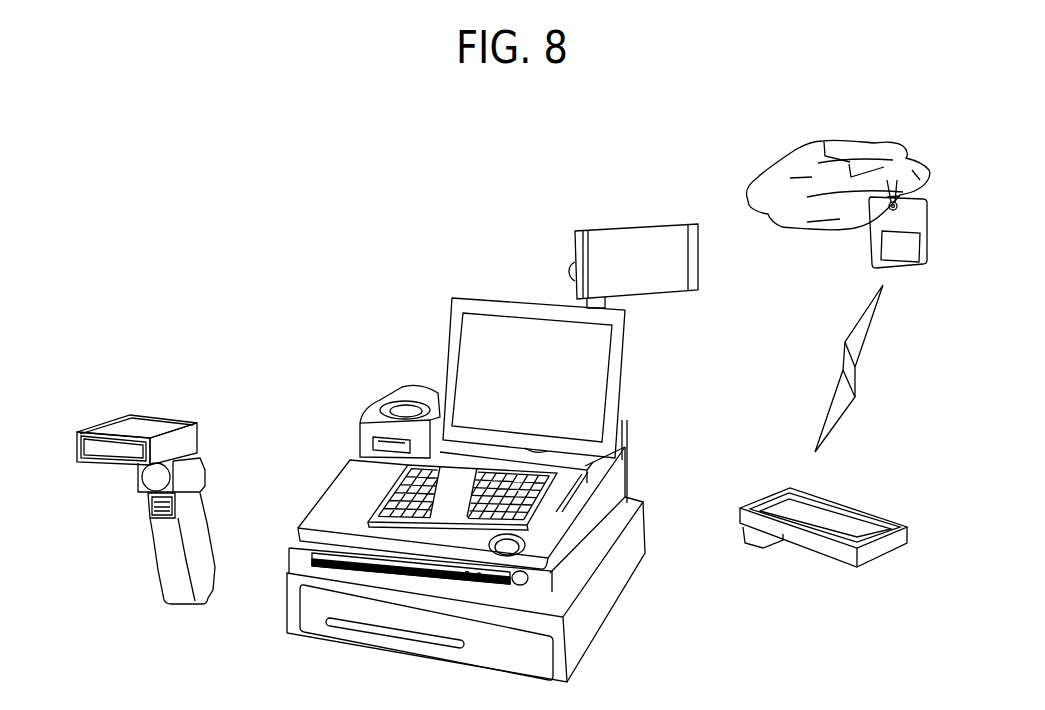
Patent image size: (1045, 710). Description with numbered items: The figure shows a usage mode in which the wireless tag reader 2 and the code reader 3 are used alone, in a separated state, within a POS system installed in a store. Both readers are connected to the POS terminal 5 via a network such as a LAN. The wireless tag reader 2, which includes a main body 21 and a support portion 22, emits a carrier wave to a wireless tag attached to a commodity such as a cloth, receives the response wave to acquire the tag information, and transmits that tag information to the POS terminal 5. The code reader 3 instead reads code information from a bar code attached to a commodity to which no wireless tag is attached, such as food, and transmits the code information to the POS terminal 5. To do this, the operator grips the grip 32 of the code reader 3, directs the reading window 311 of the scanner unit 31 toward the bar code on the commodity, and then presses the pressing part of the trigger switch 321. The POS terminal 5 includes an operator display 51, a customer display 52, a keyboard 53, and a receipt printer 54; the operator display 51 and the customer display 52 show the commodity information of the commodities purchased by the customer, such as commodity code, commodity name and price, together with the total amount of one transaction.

The wireless tag reader 2 is at (892, 481).
The main body 21 is at (878, 557).
The support portion 22 is at (757, 545).
The code reader 3 is at (165, 343).
The scanner unit 31 is at (158, 426).
The reading window 311 is at (103, 452).
The grip 32 is at (167, 565).
The trigger switch 321 is at (147, 507).
The POS terminal 5 is at (530, 188).
The operator display 51 is at (487, 327).
The customer display 52 is at (643, 247).
The keyboard 53 is at (400, 466).
The receipt printer 54 is at (368, 437).